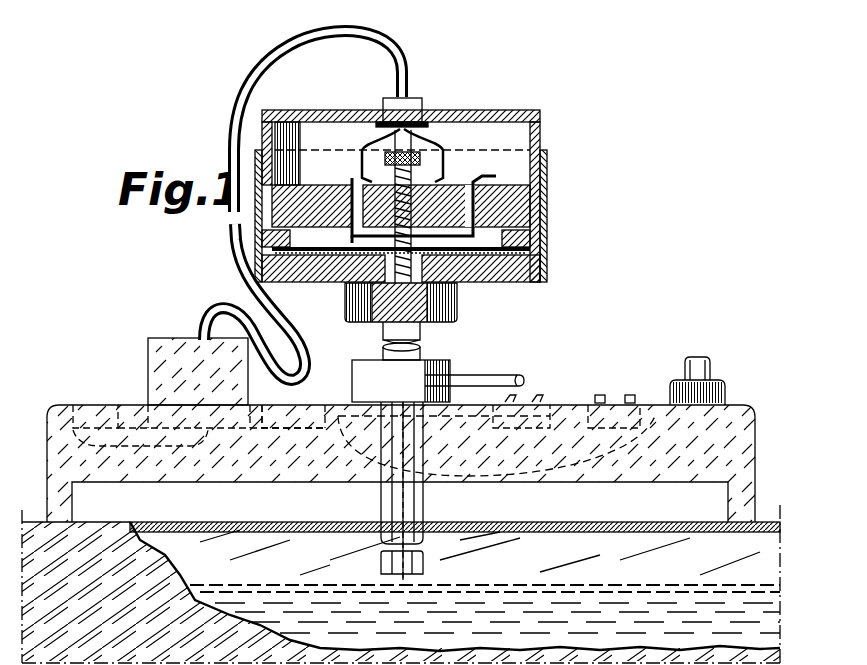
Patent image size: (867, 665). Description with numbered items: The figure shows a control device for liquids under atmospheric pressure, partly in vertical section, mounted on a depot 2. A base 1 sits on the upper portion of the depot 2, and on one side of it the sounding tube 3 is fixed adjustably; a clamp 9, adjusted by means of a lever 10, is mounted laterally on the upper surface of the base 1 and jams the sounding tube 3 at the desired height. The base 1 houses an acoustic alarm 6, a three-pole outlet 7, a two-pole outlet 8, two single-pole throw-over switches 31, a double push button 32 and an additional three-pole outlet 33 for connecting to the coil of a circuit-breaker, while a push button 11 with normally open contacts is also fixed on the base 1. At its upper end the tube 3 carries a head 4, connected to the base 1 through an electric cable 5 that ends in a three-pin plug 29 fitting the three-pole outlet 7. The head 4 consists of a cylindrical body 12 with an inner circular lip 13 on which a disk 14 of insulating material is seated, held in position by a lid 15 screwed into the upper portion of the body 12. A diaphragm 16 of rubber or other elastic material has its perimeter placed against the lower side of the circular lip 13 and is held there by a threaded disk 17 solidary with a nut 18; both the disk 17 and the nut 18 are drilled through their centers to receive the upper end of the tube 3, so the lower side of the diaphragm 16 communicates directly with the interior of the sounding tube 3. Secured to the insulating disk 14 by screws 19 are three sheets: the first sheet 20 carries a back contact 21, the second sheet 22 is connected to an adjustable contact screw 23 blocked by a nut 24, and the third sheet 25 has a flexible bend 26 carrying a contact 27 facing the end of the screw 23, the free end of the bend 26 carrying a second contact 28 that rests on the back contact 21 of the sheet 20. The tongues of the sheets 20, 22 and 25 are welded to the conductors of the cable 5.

The base 1 is at (735, 436).
The depot 2 is at (757, 522).
The sounding tube 3 is at (421, 353).
The head 4 is at (548, 168).
The electric cable 5 is at (233, 136).
The acoustic alarm 6 is at (553, 462).
The three-pole outlet 7 is at (160, 428).
The two-pole outlet 8 is at (90, 405).
The clamp 9 is at (452, 366).
The lever 10 is at (488, 374).
The push button 11 is at (714, 386).
The cylindrical body 12 is at (546, 206).
The inner circular lip 13 is at (518, 233).
The disk 14 is at (518, 208).
The lid 15 is at (528, 140).
The diaphragm 16 is at (313, 254).
The threaded disk 17 is at (512, 270).
The nut 18 is at (450, 302).
The screws 19 is at (262, 226).
The first sheet 20 is at (305, 170).
The back contact 21 is at (401, 243).
The second sheet 22 is at (355, 145).
The adjustable contact screw 23 is at (415, 152).
The nut 24 is at (440, 183).
The third sheet 25 is at (462, 177).
The flexible bend 26 is at (352, 243).
The contact 27 is at (445, 245).
The second contact 28 is at (318, 140).
The three-pin plug 29 is at (170, 337).
The single-pole throw-over switch 31 is at (512, 425).
The double push button 32 is at (601, 397).
The additional three-pole outlet 33 is at (285, 428).